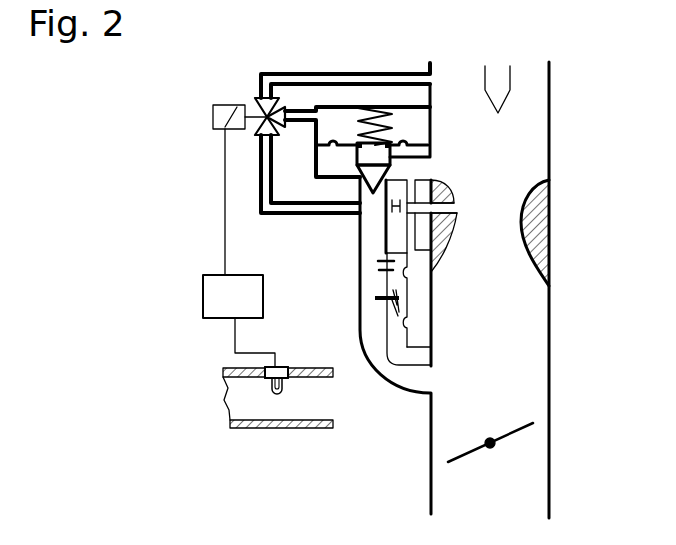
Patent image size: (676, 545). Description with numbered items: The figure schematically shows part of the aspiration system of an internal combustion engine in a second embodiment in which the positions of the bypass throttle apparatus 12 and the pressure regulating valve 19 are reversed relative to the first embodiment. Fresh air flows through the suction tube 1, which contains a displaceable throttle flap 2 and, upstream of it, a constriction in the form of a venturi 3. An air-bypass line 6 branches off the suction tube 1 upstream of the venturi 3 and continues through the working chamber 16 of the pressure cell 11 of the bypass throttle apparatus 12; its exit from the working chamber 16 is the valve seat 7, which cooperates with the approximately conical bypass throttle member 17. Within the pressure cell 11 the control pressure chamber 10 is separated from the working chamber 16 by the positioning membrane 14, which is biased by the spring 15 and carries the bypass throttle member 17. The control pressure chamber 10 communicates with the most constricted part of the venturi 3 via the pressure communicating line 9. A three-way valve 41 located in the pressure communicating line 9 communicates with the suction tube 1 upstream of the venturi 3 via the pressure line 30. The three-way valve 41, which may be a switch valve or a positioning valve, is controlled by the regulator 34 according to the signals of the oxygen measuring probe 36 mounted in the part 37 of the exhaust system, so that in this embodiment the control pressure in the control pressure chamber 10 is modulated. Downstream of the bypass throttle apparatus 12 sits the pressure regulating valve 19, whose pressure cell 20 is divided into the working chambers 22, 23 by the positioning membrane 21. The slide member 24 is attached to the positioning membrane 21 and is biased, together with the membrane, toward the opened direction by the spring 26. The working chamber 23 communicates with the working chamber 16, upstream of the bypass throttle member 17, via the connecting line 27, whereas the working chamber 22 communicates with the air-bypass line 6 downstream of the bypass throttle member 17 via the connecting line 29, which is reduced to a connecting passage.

The suction tube 1 is at (551, 506).
The throttle flap 2 is at (518, 430).
The venturi 3 is at (537, 228).
The air-bypass line 6 is at (372, 222).
The valve seat 7 is at (358, 182).
The pressure communicating line 9 is at (283, 72).
The control pressure chamber 10 is at (410, 125).
The pressure cell 11 is at (313, 133).
The bypass throttle apparatus 12 is at (360, 103).
The positioning membrane 14 is at (414, 142).
The spring 15 is at (373, 108).
The working chamber 16 is at (340, 157).
The bypass throttle member 17 is at (390, 157).
The pressure regulating valve 19 is at (433, 297).
The pressure cell 20 is at (415, 349).
The positioning membrane 21 is at (400, 333).
The working chamber 22 is at (390, 352).
The working chamber 23 is at (417, 286).
The slide member 24 is at (382, 299).
The spring 26 is at (387, 283).
The connecting line 27 is at (410, 210).
The connecting line 29 is at (383, 263).
The pressure line 30 is at (292, 80).
The regulator 34 is at (233, 290).
The oxygen measuring probe 36 is at (280, 372).
The part of the exhaust system 37 is at (300, 398).
The three-way valve 41 is at (262, 114).